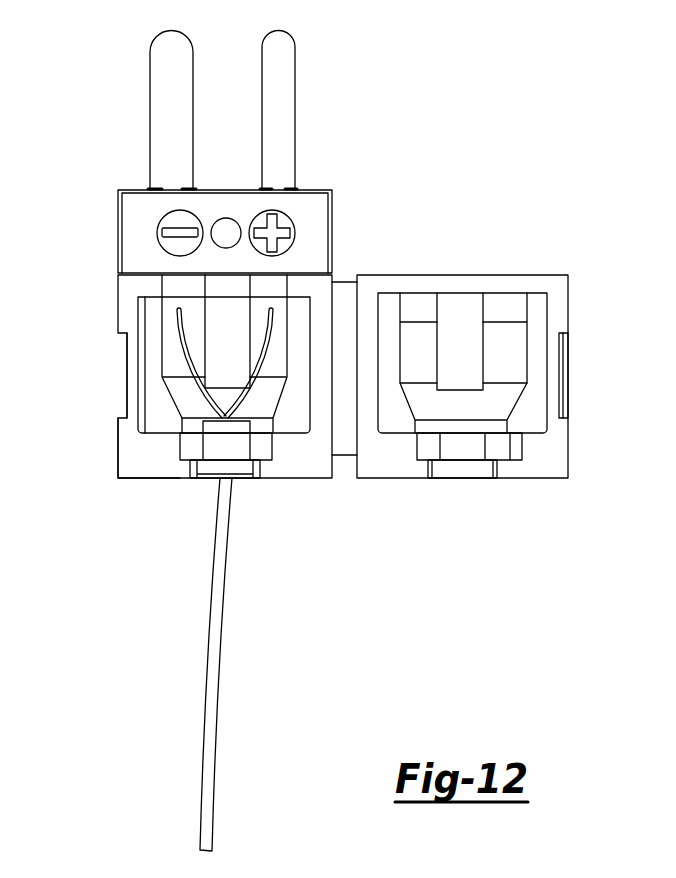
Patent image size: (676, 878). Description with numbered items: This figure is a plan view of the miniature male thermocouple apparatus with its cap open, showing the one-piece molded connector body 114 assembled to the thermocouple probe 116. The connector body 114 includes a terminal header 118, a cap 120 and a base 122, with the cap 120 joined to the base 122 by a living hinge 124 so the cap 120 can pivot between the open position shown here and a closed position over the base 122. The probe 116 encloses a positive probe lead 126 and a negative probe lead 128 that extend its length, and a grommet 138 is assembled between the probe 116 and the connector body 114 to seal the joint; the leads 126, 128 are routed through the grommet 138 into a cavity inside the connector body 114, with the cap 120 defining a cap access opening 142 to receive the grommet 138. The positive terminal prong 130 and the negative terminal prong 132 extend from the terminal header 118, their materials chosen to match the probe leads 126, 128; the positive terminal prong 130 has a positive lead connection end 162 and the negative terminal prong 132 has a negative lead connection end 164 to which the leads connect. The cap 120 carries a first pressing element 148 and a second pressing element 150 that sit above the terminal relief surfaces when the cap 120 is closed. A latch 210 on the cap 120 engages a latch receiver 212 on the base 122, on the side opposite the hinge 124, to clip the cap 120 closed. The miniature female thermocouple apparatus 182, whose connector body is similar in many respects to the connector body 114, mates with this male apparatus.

The connector body 114 is at (312, 178).
The thermocouple probe 116 is at (225, 583).
The terminal header 118 is at (315, 207).
The cap 120 is at (452, 283).
The base 122 is at (148, 462).
The living hinge 124 is at (342, 287).
The positive probe lead 126 is at (273, 367).
The negative probe lead 128 is at (190, 396).
The positive terminal prong 130 is at (285, 72).
The negative terminal prong 132 is at (163, 73).
The grommet 138 is at (225, 445).
The cap access opening 142 is at (467, 450).
The first pressing element 148 is at (512, 340).
The second pressing element 150 is at (420, 340).
The positive lead connection end 162 is at (270, 288).
The negative lead connection end 164 is at (187, 295).
The miniature female thermocouple apparatus 182 is at (408, 645).
The latch 210 is at (570, 373).
The latch receiver 212 is at (126, 350).